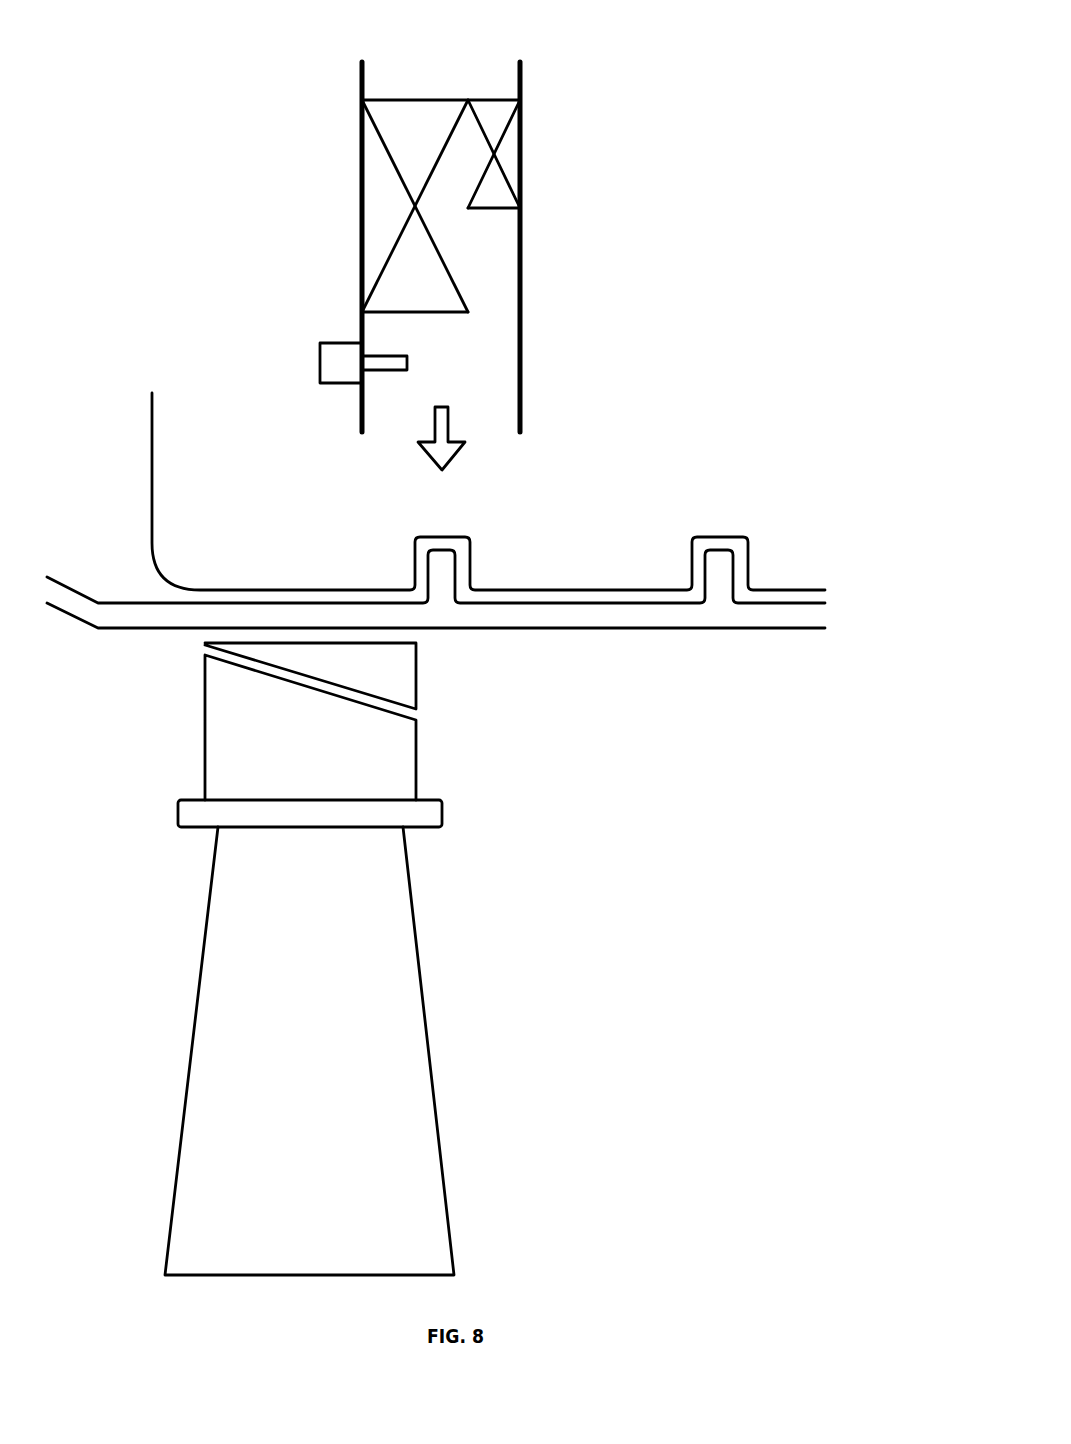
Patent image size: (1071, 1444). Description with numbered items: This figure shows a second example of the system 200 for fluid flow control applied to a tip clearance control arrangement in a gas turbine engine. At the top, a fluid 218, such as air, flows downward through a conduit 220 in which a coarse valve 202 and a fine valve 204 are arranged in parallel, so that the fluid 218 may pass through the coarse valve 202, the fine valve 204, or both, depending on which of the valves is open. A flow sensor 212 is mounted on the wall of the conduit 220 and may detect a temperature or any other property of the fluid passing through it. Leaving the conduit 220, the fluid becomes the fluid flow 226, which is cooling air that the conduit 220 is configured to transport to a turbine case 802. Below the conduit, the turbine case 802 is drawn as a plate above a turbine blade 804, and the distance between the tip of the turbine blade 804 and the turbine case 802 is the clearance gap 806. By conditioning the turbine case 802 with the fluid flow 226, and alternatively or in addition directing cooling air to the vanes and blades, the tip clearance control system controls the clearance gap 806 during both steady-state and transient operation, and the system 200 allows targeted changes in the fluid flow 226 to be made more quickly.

The system for fluid flow control 200 is at (586, 188).
The coarse valve 202 is at (448, 303).
The fine valve 204 is at (500, 204).
The flow sensor 212 is at (324, 353).
The fluid 218 is at (455, 90).
The conduit 220 is at (522, 342).
The fluid flow 226 is at (457, 460).
The turbine case 802 is at (562, 590).
The turbine blade 804 is at (212, 933).
The clearance gap 806 is at (423, 717).